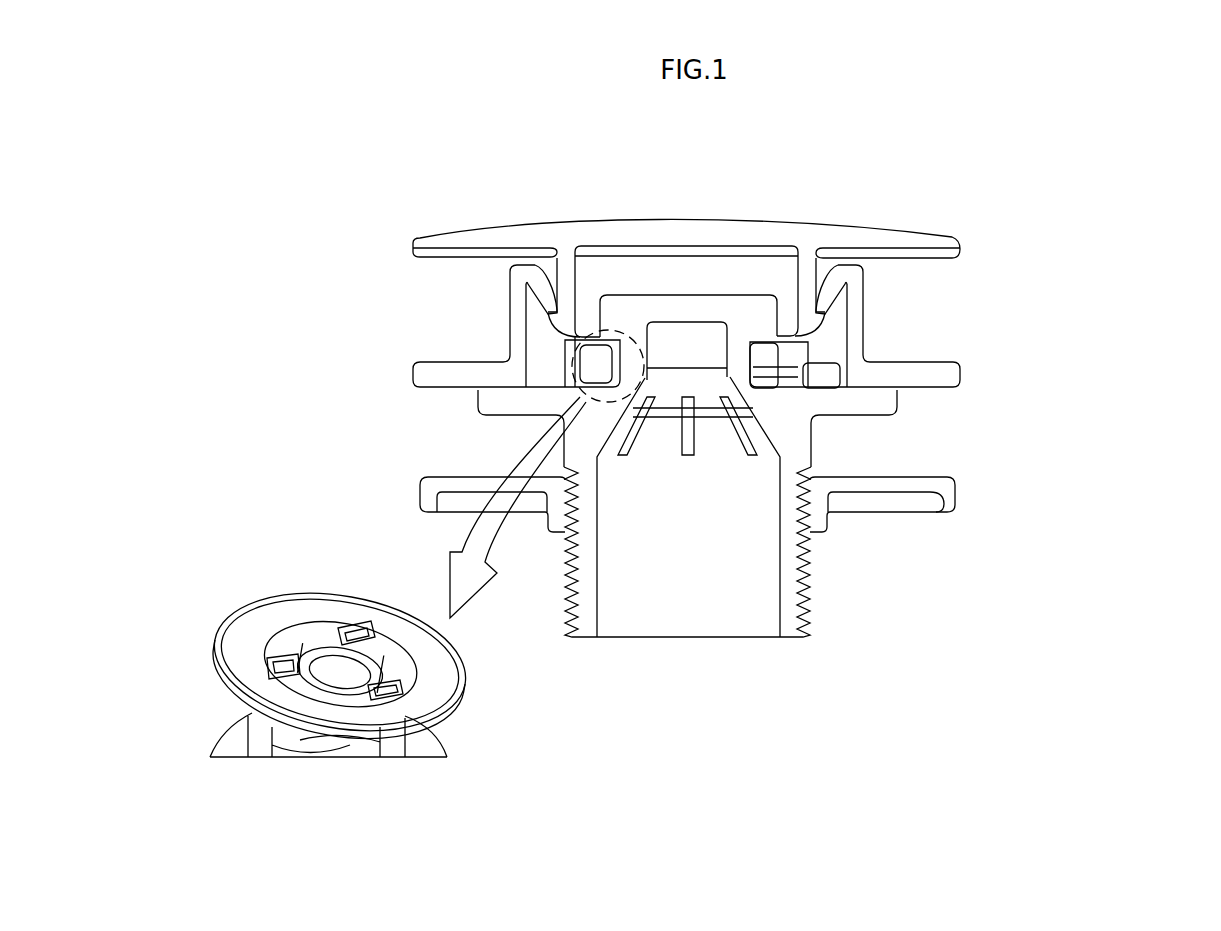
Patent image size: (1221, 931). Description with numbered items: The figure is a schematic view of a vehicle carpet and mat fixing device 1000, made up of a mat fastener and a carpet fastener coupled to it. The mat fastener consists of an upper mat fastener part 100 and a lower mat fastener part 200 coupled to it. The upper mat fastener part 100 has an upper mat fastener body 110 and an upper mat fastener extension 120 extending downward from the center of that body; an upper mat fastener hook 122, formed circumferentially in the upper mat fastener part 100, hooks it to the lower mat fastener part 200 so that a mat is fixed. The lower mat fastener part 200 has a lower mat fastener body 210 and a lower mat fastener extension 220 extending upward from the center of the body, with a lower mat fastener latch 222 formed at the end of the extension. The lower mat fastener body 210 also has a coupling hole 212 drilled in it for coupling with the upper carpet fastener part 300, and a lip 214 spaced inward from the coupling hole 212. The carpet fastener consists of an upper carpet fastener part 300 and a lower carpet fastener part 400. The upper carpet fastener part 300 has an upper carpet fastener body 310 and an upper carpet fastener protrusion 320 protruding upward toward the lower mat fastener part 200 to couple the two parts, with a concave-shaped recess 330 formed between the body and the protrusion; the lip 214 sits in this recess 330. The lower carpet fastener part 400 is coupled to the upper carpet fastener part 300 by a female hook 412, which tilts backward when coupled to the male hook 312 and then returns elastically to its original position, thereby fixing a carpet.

The vehicle carpet and mat fixing device 1000 is at (1115, 262).
The upper mat fastener part 100 is at (1060, 238).
The upper mat fastener body 110 is at (960, 250).
The upper mat fastener extension 120 is at (817, 289).
The upper mat fastener hook 122 is at (547, 322).
The lower mat fastener part 200 is at (1060, 335).
The lower mat fastener body 210 is at (957, 378).
The coupling hole 212 is at (333, 677).
The lip 214 is at (342, 693).
The lower mat fastener extension 220 is at (865, 333).
The lower mat fastener latch 222 is at (542, 303).
The upper carpet fastener part 300 is at (1060, 430).
The upper carpet fastener body 310 is at (811, 442).
The male hook 312 is at (809, 588).
The upper carpet fastener protrusion 320 is at (762, 350).
The recess 330 is at (747, 362).
The lower carpet fastener part 400 is at (948, 500).
The female hook 412 is at (826, 520).